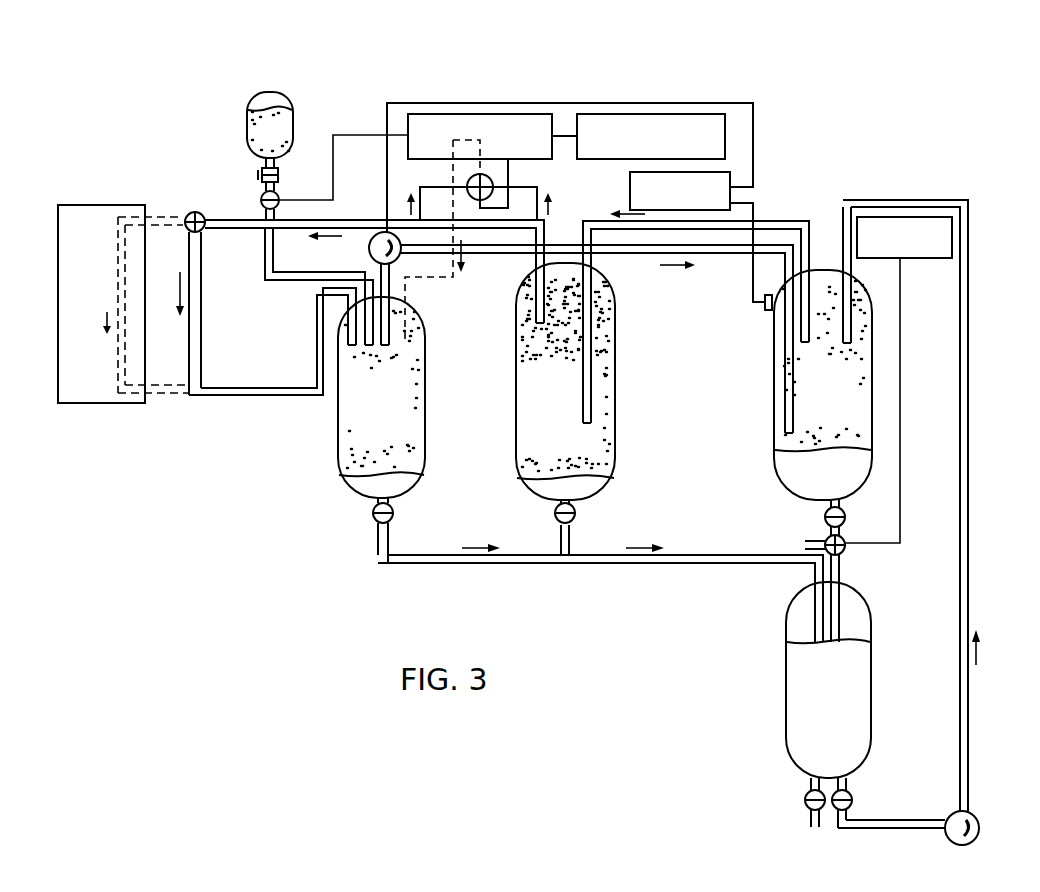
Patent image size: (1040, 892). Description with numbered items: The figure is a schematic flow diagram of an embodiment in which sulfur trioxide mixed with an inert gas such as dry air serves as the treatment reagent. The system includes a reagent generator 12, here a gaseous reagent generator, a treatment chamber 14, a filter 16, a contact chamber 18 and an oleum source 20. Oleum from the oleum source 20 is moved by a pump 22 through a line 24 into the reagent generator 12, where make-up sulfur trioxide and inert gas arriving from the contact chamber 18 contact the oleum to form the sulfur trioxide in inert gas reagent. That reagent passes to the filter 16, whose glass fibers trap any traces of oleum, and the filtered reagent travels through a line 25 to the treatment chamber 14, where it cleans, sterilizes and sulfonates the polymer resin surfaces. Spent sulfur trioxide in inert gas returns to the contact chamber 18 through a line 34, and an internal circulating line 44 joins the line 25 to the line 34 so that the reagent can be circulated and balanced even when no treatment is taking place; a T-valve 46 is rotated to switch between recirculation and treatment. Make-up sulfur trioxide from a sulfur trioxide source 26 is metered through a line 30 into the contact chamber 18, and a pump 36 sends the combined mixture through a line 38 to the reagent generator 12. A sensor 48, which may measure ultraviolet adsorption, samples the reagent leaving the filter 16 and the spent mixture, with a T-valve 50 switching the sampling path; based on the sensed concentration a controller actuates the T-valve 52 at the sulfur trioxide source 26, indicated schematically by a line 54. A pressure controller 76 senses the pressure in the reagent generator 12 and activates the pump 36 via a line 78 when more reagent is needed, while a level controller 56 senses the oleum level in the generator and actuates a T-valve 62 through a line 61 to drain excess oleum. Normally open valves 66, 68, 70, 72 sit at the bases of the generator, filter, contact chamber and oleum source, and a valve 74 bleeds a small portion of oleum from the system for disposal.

The reagent generator 12 is at (774, 352).
The treatment chamber 14 is at (58, 275).
The filter 16 is at (615, 376).
The contact chamber 18 is at (425, 390).
The oleum source 20 is at (786, 662).
The pump 22 is at (975, 815).
The line 24 is at (968, 526).
The line 25 is at (345, 220).
The sulfur trioxide source 26 is at (247, 125).
The line 30 is at (288, 272).
The line 34 is at (268, 396).
The pump 36 is at (370, 254).
The line 38 is at (627, 258).
The internal circulating line 44 is at (201, 278).
The T-valve 46 is at (192, 210).
The sensor 48 is at (440, 159).
The T-valve 50 is at (493, 187).
The T-valve 52 is at (261, 201).
The line 54 is at (362, 135).
The level controller 56 is at (905, 217).
The line 61 is at (900, 400).
The T-valve 62 is at (845, 552).
The valve 66 is at (845, 517).
The valve 68 is at (555, 514).
The valve 70 is at (373, 514).
The valve 72 is at (852, 804).
The valve 74 is at (805, 798).
The pressure controller 76 is at (630, 190).
The line 78 is at (753, 153).